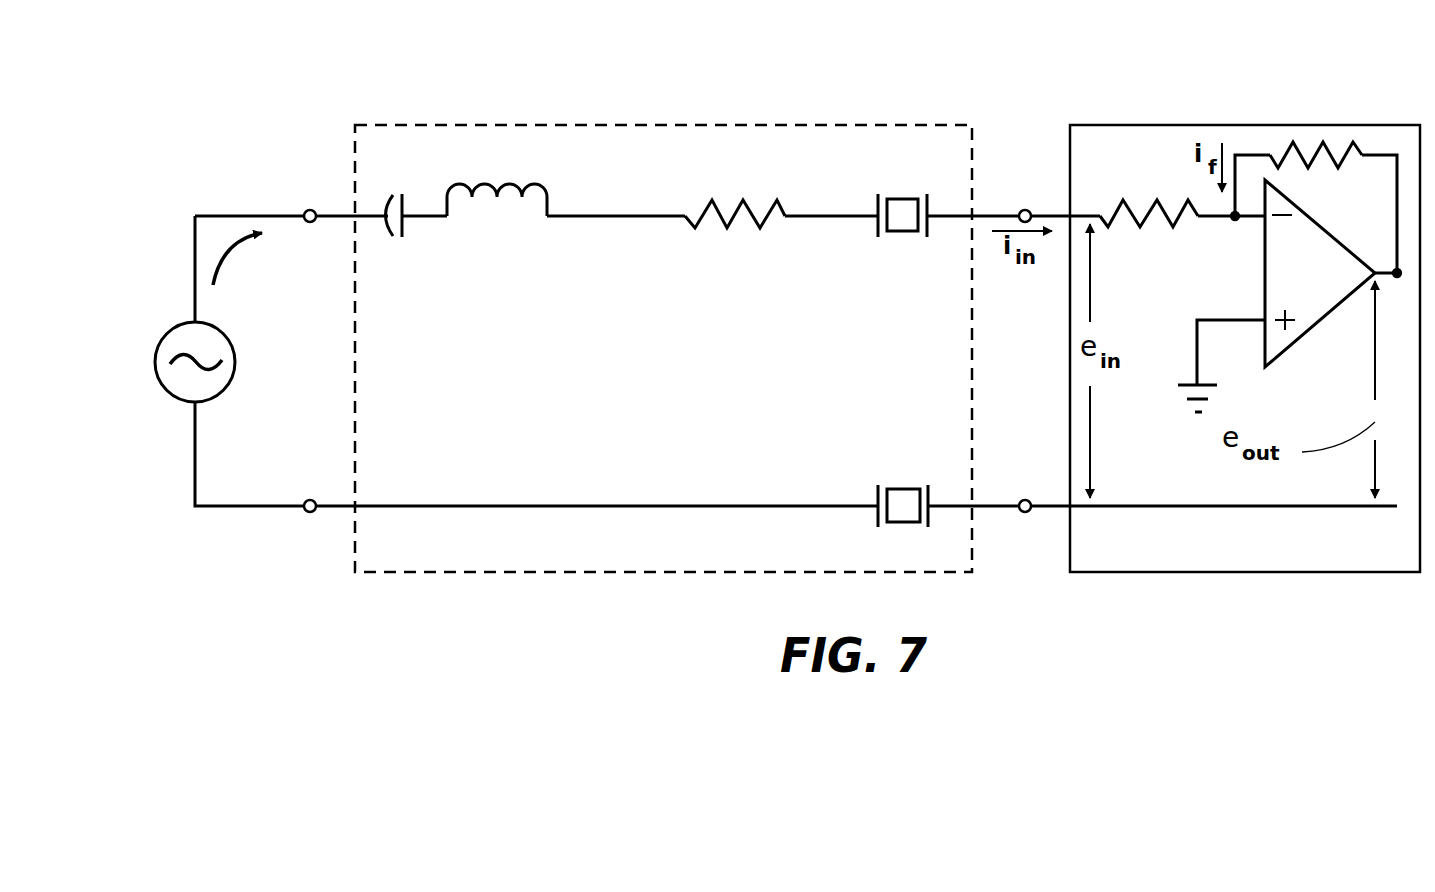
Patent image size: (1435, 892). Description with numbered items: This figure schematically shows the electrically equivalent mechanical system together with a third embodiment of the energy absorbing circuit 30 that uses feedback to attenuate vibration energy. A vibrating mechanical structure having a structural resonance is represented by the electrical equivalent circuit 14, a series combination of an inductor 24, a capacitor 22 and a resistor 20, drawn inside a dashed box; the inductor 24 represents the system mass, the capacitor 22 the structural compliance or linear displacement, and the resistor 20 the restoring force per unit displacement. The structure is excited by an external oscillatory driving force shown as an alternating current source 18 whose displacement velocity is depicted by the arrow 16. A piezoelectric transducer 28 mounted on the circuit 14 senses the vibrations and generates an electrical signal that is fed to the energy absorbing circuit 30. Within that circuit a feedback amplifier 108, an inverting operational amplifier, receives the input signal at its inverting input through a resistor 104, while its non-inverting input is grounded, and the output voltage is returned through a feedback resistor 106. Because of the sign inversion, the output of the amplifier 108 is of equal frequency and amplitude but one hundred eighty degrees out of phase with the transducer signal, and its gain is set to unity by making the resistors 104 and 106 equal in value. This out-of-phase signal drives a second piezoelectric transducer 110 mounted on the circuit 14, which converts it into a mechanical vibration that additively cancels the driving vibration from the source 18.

The electrical equivalent circuit 14 is at (661, 118).
The arrow 16 is at (228, 258).
The alternating current source 18 is at (157, 358).
The resistor 20 is at (738, 218).
The capacitor 22 is at (405, 236).
The inductor 24 is at (497, 197).
The piezoelectric transducer 28 is at (903, 232).
The energy absorbing circuit 30 is at (1171, 118).
The resistor 104 is at (1148, 214).
The feedback resistor 106 is at (1315, 152).
The feedback amplifier 108 is at (1327, 312).
The second piezoelectric transducer 110 is at (900, 488).